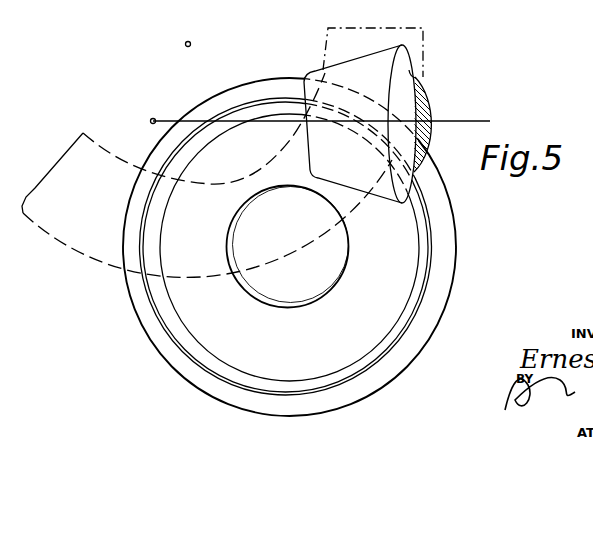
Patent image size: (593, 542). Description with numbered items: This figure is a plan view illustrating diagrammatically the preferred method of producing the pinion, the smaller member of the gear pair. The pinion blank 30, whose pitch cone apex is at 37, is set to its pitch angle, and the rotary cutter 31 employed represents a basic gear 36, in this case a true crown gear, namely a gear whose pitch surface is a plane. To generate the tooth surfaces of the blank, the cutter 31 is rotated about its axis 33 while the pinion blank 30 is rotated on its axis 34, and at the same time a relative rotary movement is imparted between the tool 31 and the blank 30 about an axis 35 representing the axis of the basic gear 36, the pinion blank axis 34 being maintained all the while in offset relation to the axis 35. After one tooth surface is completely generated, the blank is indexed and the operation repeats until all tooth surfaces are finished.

The pinion blank 30 is at (347, 67).
The rotary cutter 31 is at (457, 278).
The cutter axis 33 is at (288, 244).
The pinion blank axis 34 is at (449, 122).
The basic gear axis 35 is at (190, 43).
The basic gear 36 is at (86, 144).
The pitch cone apex 37 is at (155, 119).